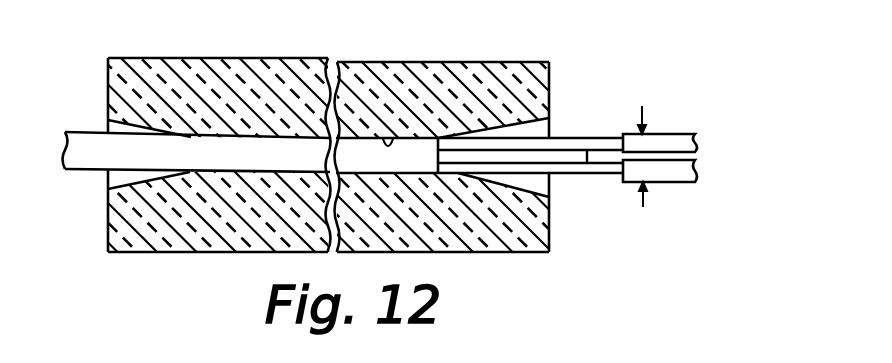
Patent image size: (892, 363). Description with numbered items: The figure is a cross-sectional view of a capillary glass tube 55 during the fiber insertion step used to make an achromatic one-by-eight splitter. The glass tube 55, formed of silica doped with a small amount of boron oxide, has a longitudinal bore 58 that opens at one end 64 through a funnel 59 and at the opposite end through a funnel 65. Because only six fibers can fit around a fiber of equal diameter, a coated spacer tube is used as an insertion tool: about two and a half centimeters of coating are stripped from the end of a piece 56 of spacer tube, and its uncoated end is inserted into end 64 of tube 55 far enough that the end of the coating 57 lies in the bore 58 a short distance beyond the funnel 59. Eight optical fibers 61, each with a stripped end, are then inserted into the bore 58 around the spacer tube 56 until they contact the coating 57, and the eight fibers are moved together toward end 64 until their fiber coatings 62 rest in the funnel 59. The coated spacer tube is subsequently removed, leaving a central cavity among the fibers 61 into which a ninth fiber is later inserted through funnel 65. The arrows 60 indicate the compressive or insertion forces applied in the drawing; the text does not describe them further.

The glass tube 55 is at (407, 62).
The piece of spacer tube 56 is at (567, 157).
The coating 57 is at (389, 166).
The bore 58 is at (388, 139).
The funnel 59 is at (550, 132).
The compression force arrows 60 is at (642, 158).
The optical fibers 61 is at (598, 143).
The fiber coatings 62 is at (672, 134).
The end of tube 64 is at (108, 78).
The funnel 65 is at (123, 185).